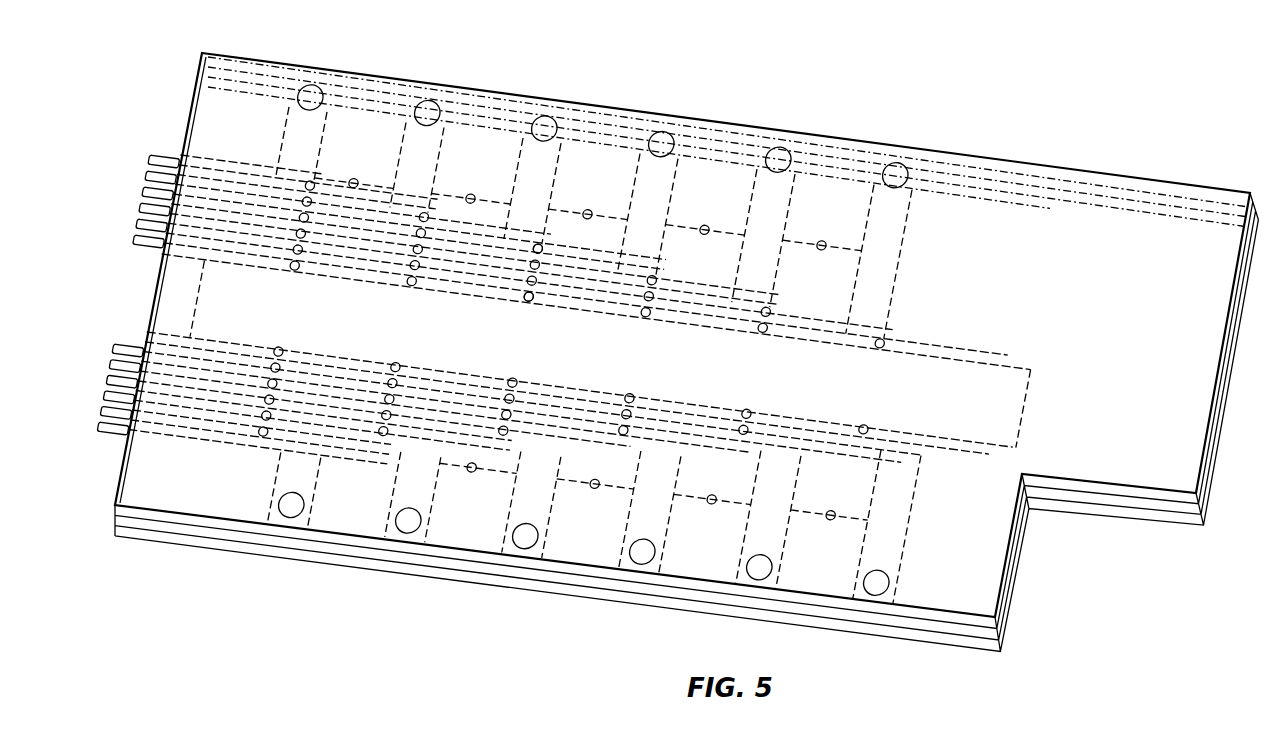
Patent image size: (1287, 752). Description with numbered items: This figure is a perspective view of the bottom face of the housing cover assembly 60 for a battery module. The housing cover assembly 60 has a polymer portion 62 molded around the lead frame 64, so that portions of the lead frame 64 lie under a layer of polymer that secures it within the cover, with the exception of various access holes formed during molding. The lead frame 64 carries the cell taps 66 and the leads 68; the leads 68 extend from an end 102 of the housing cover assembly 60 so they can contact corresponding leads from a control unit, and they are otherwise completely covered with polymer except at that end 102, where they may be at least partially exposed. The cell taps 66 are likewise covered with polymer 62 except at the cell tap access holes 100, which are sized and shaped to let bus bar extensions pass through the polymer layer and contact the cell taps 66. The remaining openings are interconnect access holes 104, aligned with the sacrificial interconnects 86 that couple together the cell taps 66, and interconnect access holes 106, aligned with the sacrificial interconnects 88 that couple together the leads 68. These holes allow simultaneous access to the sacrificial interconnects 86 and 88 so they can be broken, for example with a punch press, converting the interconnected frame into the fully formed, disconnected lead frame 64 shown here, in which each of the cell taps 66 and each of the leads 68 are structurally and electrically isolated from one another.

The housing cover assembly 60 is at (1028, 95).
The polymer portion 62 is at (1058, 225).
The lead frame 64 is at (242, 300).
The cell taps 66 is at (547, 117).
The leads 68 is at (152, 188).
The sacrificial interconnects 86 is at (814, 249).
The sacrificial interconnects 88 is at (524, 297).
The cell tap access holes 100 is at (897, 166).
The end 102 is at (178, 102).
The interconnect access holes 104 is at (818, 243).
The interconnect access holes 106 is at (533, 298).